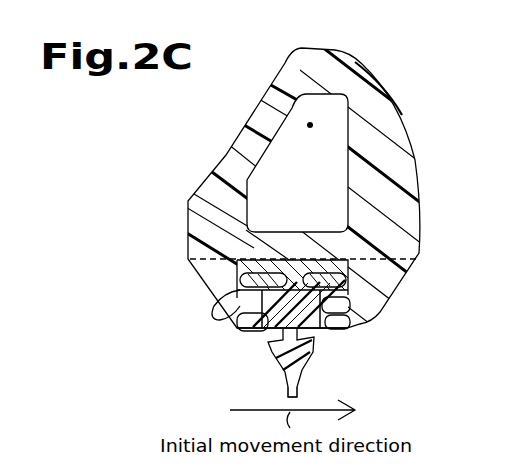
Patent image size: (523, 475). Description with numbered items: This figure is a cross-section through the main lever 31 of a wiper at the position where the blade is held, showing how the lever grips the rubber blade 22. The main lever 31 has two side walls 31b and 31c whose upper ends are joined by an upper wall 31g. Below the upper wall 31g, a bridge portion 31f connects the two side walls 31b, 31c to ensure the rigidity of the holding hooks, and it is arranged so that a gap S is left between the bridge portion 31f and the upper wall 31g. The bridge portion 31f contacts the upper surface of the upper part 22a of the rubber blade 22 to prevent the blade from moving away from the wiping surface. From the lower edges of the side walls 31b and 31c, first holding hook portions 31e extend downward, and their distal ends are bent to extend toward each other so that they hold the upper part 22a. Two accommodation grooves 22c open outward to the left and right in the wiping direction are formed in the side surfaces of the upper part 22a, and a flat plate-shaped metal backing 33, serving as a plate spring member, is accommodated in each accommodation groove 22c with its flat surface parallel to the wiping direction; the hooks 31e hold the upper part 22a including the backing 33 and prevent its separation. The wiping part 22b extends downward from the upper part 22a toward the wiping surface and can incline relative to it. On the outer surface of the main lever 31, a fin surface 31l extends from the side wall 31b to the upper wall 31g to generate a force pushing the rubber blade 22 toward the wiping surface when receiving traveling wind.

The main lever 31 is at (392, 88).
The upper wall 31g is at (327, 63).
The fin surface 31l is at (241, 124).
The side wall 31b is at (200, 218).
The side wall 31c is at (406, 205).
The bridge portion 31f is at (300, 231).
The gap S is at (310, 122).
The backing 33 is at (240, 280).
The upper part 22a is at (350, 322).
The accommodation groove 22c is at (240, 304).
The first holding hook portion 31e is at (230, 320).
The rubber blade 22 is at (308, 370).
The wiping part 22b is at (288, 384).